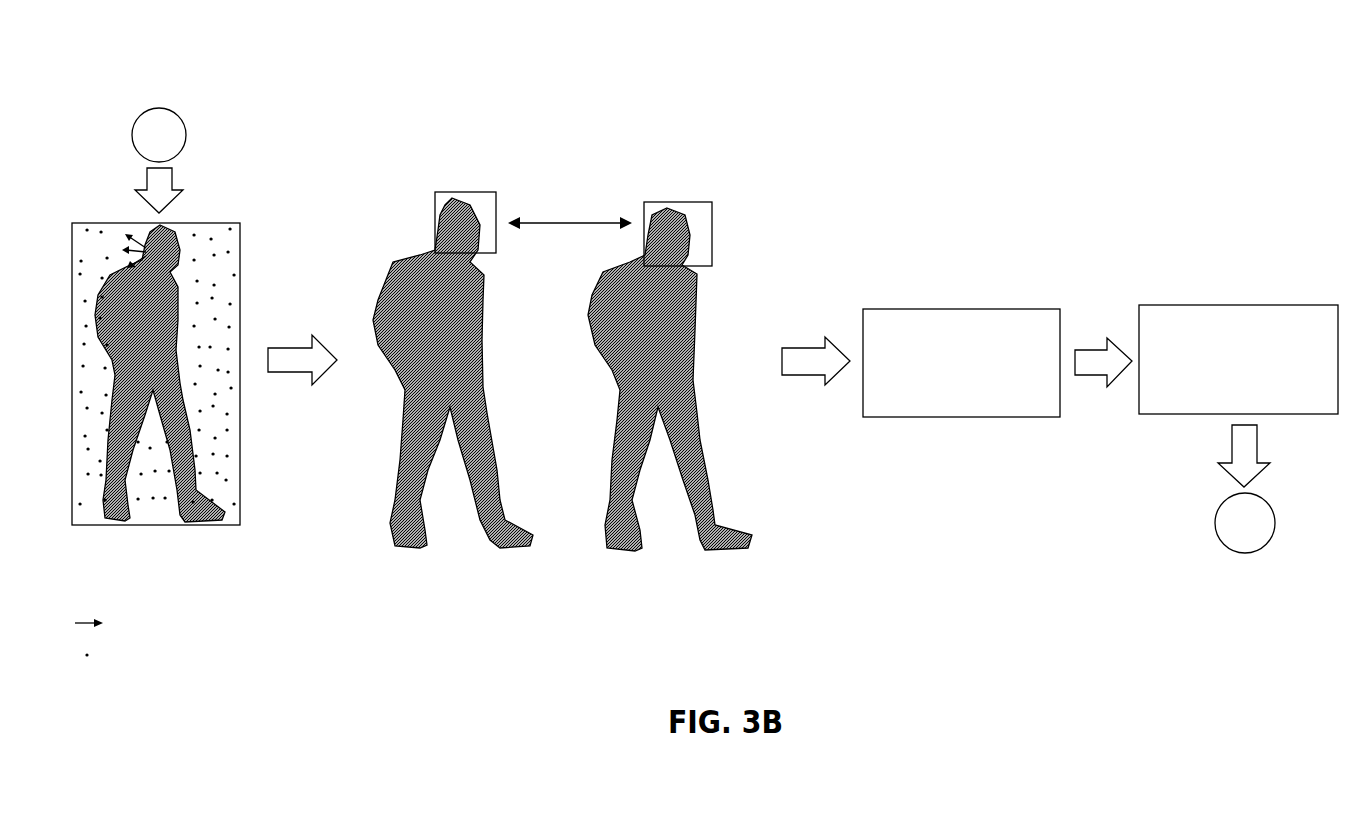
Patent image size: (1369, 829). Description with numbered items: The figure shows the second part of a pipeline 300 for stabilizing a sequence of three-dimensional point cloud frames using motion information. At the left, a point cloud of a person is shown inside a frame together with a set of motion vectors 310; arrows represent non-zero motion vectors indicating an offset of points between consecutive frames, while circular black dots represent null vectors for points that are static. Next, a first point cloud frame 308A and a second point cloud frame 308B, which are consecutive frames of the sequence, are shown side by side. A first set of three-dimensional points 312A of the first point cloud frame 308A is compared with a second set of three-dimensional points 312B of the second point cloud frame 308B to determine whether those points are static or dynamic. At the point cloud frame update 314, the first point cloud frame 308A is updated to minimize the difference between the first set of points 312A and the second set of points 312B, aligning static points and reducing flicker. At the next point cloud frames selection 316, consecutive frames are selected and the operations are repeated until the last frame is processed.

The pipeline 300 is at (117, 75).
The set of motion vectors 310 is at (201, 235).
The first point cloud frame 308A is at (407, 255).
The second point cloud frame 308B is at (692, 316).
The first set of 3D points 312A is at (452, 192).
The second set of 3D points 312B is at (652, 202).
The point cloud frame update 314 is at (1016, 389).
The next point cloud frames selection 316 is at (1220, 399).